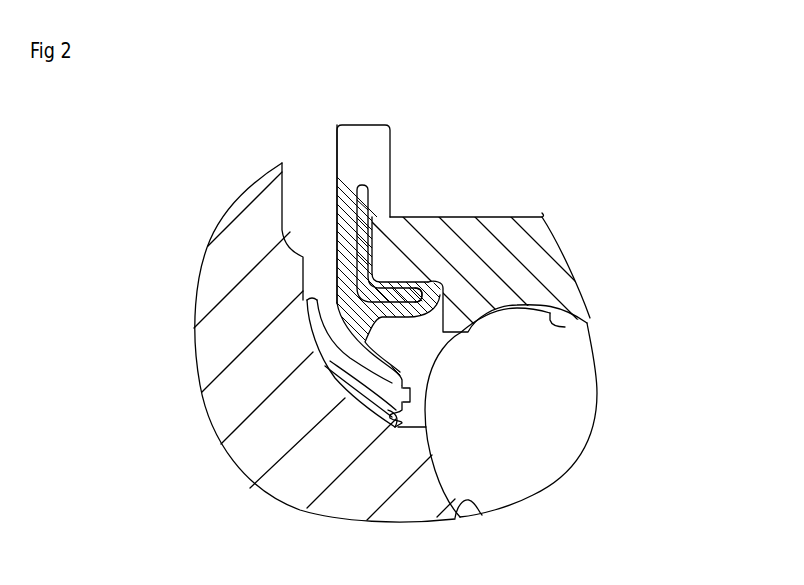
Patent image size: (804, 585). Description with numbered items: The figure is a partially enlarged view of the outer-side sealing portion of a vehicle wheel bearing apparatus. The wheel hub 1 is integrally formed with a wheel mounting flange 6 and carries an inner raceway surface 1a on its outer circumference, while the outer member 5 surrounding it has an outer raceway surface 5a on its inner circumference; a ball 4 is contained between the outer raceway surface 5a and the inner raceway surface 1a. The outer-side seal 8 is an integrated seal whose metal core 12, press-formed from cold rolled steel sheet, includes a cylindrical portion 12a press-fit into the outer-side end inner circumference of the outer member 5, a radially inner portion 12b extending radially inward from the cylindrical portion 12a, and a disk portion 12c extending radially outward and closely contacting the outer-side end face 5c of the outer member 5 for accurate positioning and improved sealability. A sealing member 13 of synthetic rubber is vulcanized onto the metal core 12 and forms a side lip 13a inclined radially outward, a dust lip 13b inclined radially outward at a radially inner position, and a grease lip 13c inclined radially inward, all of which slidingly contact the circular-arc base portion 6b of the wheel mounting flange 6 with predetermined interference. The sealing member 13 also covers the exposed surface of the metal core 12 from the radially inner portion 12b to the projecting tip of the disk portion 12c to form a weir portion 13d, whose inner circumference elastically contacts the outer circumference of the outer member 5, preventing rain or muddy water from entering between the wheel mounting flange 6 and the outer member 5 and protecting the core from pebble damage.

The wheel hub 1 is at (265, 463).
The inner raceway surface 1a is at (475, 512).
The balls 4 is at (585, 383).
The outer member 5 is at (505, 221).
The outer raceway surface 5a is at (565, 327).
The outer-side end face 5c is at (362, 242).
The wheel mounting flange 6 is at (238, 207).
The base portion 6b is at (428, 400).
The outer-side seal 8 is at (87, 275).
The metal core 12 is at (138, 230).
The cylindrical portion 12a is at (375, 272).
The radially inner portion 12b is at (400, 285).
The disk portion 12c is at (357, 208).
The sealing member 13 is at (138, 323).
The side lip 13a is at (315, 303).
The dust lip 13b is at (327, 378).
The grease lip 13c is at (395, 425).
The weir portion 13d is at (347, 145).